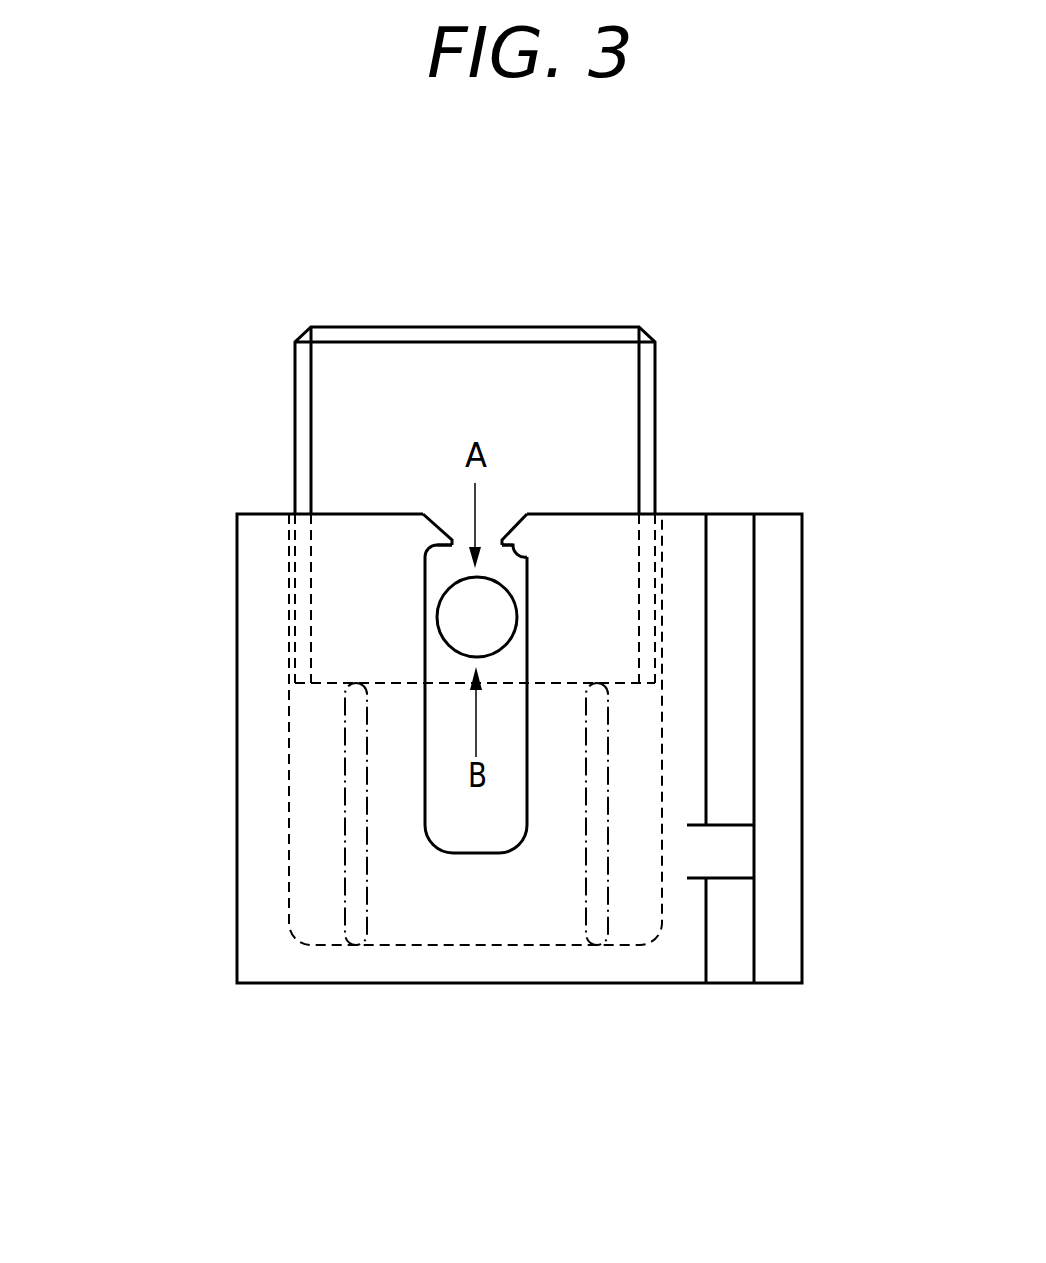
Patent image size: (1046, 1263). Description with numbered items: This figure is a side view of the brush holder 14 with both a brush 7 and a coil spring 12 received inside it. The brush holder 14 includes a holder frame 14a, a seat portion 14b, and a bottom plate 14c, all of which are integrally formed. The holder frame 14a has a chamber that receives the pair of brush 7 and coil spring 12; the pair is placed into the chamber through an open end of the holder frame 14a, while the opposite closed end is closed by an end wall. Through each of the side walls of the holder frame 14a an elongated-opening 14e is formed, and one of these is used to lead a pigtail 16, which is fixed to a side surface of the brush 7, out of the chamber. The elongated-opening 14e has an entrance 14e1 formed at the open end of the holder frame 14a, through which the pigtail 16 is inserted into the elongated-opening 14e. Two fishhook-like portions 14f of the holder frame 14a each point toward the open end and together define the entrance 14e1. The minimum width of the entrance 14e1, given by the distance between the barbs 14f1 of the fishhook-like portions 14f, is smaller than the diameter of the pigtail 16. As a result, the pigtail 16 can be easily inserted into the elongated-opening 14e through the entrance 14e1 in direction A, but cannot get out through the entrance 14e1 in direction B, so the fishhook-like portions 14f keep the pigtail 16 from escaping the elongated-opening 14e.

The brush 7 is at (599, 378).
The coil spring 12 is at (357, 935).
The brush holder 14 is at (228, 586).
The holder frame 14a is at (265, 895).
The seat portion 14b is at (725, 798).
The bottom plate 14c is at (778, 930).
The elongated-opening 14e is at (443, 810).
The entrance 14e1 is at (458, 533).
The fishhook-like portion 14f is at (430, 533).
The barb 14f1 is at (440, 550).
The pigtail 16 is at (470, 627).